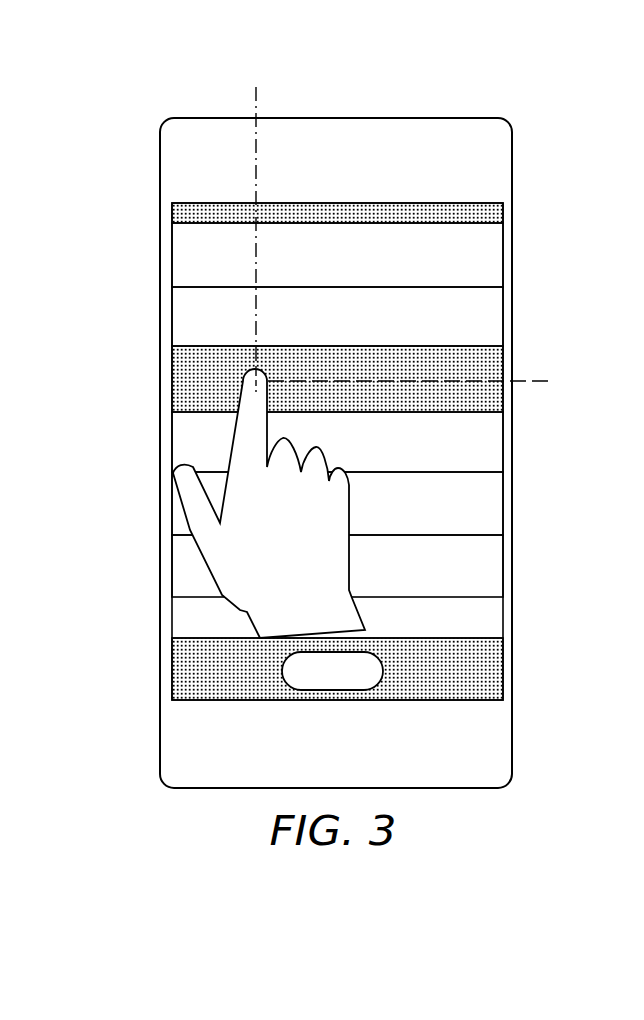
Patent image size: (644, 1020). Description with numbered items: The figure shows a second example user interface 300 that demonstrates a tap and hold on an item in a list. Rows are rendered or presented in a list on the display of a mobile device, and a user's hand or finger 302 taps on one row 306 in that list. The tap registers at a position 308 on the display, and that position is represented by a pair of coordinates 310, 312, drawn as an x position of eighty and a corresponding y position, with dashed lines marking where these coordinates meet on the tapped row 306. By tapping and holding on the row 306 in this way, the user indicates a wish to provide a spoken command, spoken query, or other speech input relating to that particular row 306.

The user interface 300 is at (468, 82).
The user's hand or finger 302 is at (180, 467).
The row 306 is at (376, 430).
The position 308 is at (247, 377).
The x coordinate 310 is at (300, 66).
The y coordinate 312 is at (622, 366).